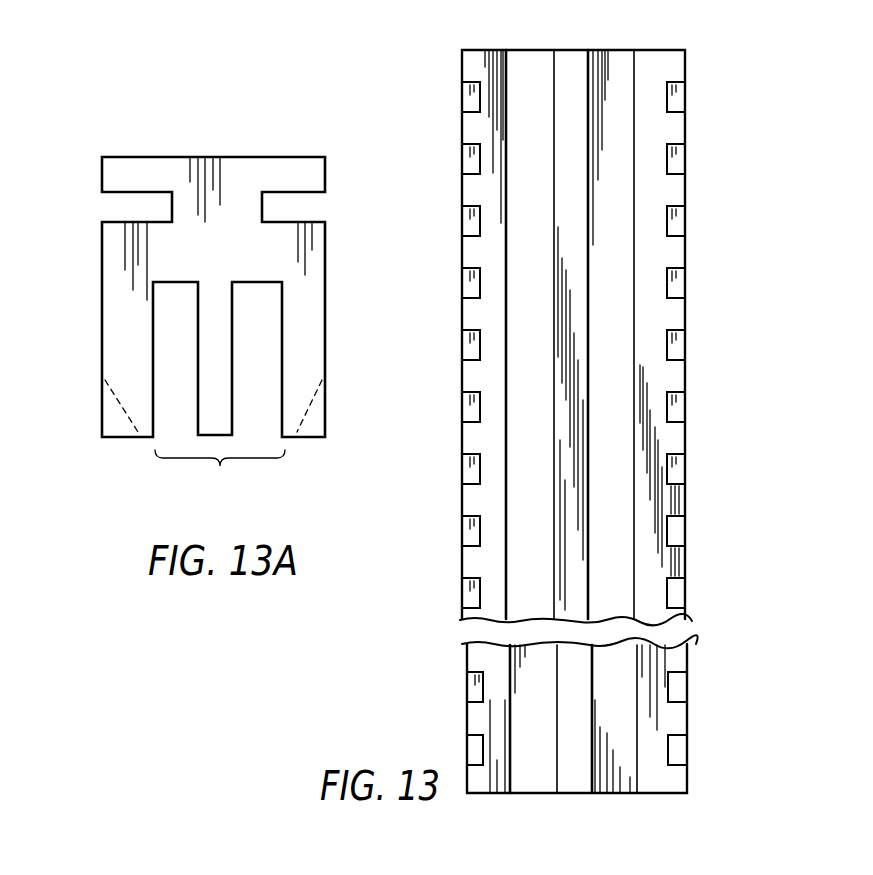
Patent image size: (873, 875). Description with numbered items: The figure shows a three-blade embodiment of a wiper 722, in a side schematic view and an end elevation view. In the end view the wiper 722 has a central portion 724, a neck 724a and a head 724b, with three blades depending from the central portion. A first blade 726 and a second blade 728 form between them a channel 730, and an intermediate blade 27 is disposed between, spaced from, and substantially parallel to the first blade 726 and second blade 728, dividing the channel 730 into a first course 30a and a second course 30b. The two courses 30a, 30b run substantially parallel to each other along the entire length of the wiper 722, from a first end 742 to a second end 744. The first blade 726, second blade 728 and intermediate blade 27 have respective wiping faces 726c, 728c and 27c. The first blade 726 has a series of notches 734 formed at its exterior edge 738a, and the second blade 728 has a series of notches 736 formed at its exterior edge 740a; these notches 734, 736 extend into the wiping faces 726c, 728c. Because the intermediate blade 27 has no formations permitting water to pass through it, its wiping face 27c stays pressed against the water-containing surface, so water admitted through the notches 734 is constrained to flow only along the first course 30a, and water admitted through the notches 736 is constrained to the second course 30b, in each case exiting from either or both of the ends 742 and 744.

In FIG. 13A, the wiper 722 is at (97, 308).
In FIG. 13, the wiper 722 is at (455, 352).
In FIG. 13A, the central portion 724 is at (213, 233).
In FIG. 13A, the neck 724a is at (210, 210).
In FIG. 13A, the head 724b is at (246, 167).
In FIG. 13A, the first blade 726 is at (123, 350).
In FIG. 13, the first blade 726 is at (470, 316).
In FIG. 13A, the wiping face 726c is at (110, 438).
In FIG. 13, the wiping face 726c is at (477, 128).
In FIG. 13A, the intermediate blade 27 is at (213, 333).
In FIG. 13, the intermediate blade 27 is at (572, 405).
In FIG. 13A, the wiping face 27c is at (210, 437).
In FIG. 13, the wiping face 27c is at (580, 76).
In FIG. 13A, the second blade 728 is at (305, 325).
In FIG. 13, the second blade 728 is at (667, 318).
In FIG. 13A, the wiping face 728c is at (302, 438).
In FIG. 13, the wiping face 728c is at (645, 142).
In FIG. 13A, the channel 730 is at (220, 466).
In FIG. 13, the channel 730 is at (613, 152).
In FIG. 13A, the notches 734 is at (104, 442).
In FIG. 13, the notches 734 is at (472, 160).
In FIG. 13A, the notches 736 is at (323, 440).
In FIG. 13, the exterior edge 738a is at (462, 258).
In FIG. 13, the exterior edge 740a is at (685, 500).
In FIG. 13, the first end 742 is at (573, 50).
In FIG. 13, the second end 744 is at (593, 795).
In FIG. 13A, the first course 30a is at (170, 303).
In FIG. 13, the first course 30a is at (530, 432).
In FIG. 13A, the second course 30b is at (252, 302).
In FIG. 13, the second course 30b is at (607, 482).